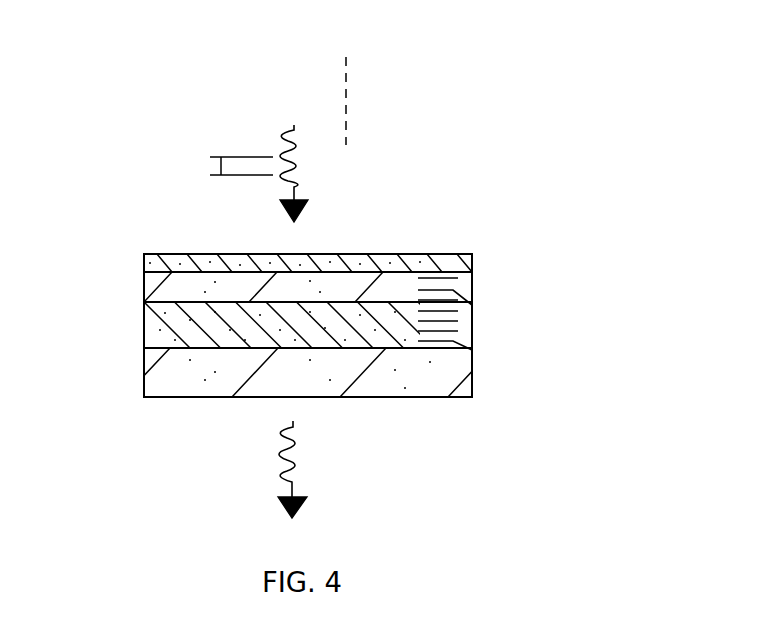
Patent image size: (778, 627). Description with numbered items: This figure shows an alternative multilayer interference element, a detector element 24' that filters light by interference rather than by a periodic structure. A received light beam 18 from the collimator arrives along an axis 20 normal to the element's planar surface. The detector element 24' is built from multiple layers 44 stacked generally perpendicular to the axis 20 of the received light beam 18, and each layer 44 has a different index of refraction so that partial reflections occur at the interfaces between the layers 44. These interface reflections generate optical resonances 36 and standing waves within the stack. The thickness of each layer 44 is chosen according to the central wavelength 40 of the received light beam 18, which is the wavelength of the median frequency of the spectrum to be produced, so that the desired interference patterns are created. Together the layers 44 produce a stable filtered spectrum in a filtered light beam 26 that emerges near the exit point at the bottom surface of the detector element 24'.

The received light beam 18 is at (295, 187).
The axis 20 is at (347, 95).
The detector element 24' is at (365, 325).
The filtered light beam 26 is at (292, 463).
The optical resonances 36 is at (472, 350).
The central wavelength 40 is at (221, 167).
The layers 44 is at (142, 265).